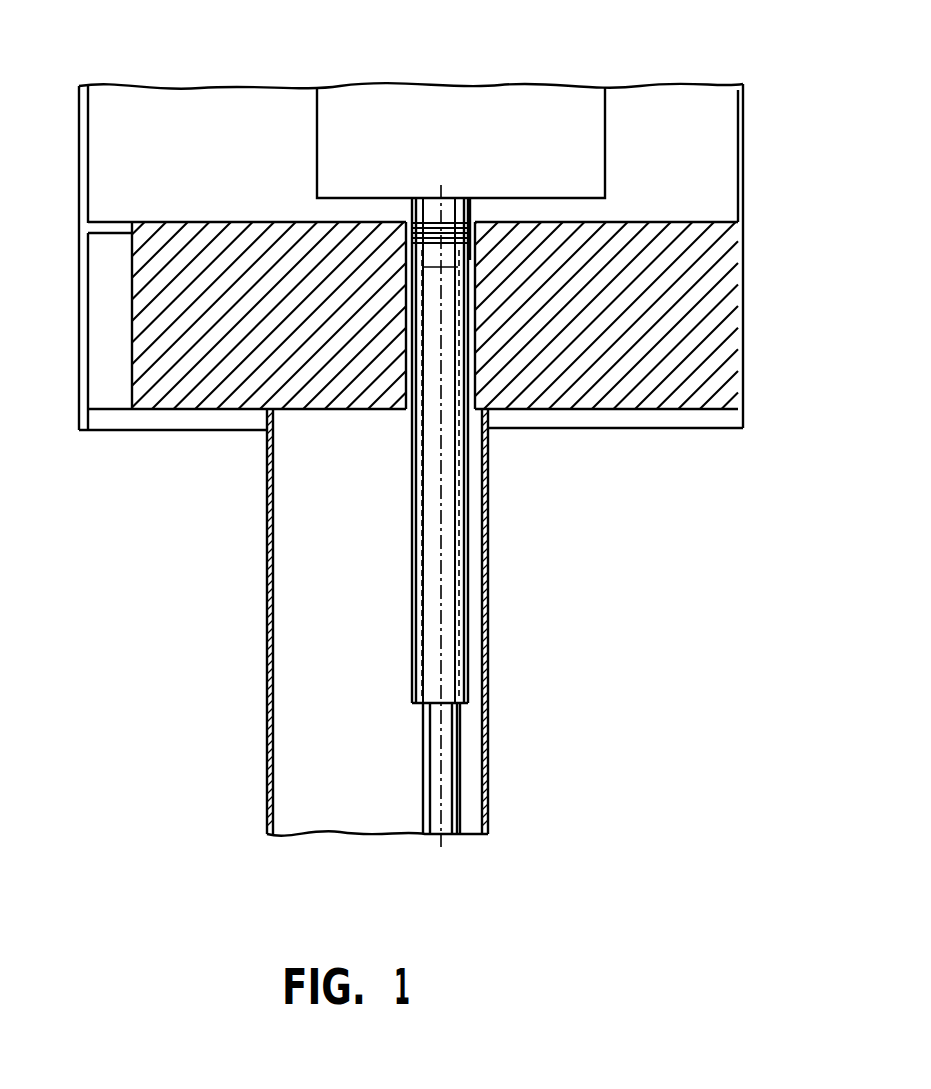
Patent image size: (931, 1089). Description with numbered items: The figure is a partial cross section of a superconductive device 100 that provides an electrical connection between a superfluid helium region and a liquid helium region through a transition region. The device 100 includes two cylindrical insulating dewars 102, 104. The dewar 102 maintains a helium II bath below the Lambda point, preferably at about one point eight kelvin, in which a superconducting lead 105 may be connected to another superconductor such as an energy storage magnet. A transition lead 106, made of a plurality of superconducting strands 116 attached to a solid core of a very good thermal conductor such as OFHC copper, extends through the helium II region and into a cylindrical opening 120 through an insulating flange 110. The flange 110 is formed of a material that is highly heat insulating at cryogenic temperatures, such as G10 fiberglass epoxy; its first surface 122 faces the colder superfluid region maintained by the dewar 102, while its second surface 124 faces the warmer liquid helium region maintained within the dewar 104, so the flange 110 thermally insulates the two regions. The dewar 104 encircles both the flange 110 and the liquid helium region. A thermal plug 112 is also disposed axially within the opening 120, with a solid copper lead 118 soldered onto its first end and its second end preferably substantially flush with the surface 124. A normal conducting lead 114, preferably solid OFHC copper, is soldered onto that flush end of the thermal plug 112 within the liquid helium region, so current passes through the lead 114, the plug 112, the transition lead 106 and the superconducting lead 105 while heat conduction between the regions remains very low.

The superconductive device 100 is at (458, 434).
The cylindrical insulating dewar 102 is at (485, 552).
The cylindrical insulating dewar 104 is at (745, 247).
The superconducting lead 105 is at (453, 767).
The transition lead 106 is at (460, 622).
The insulating flange 110 is at (148, 410).
The thermal plug 112 is at (443, 226).
The conducting lead 114 is at (483, 88).
The superconducting strands 116 is at (443, 620).
The solid copper lead 118 is at (420, 545).
The cylindrical opening 120 is at (473, 256).
The first surface 122 is at (300, 409).
The second surface 124 is at (178, 222).